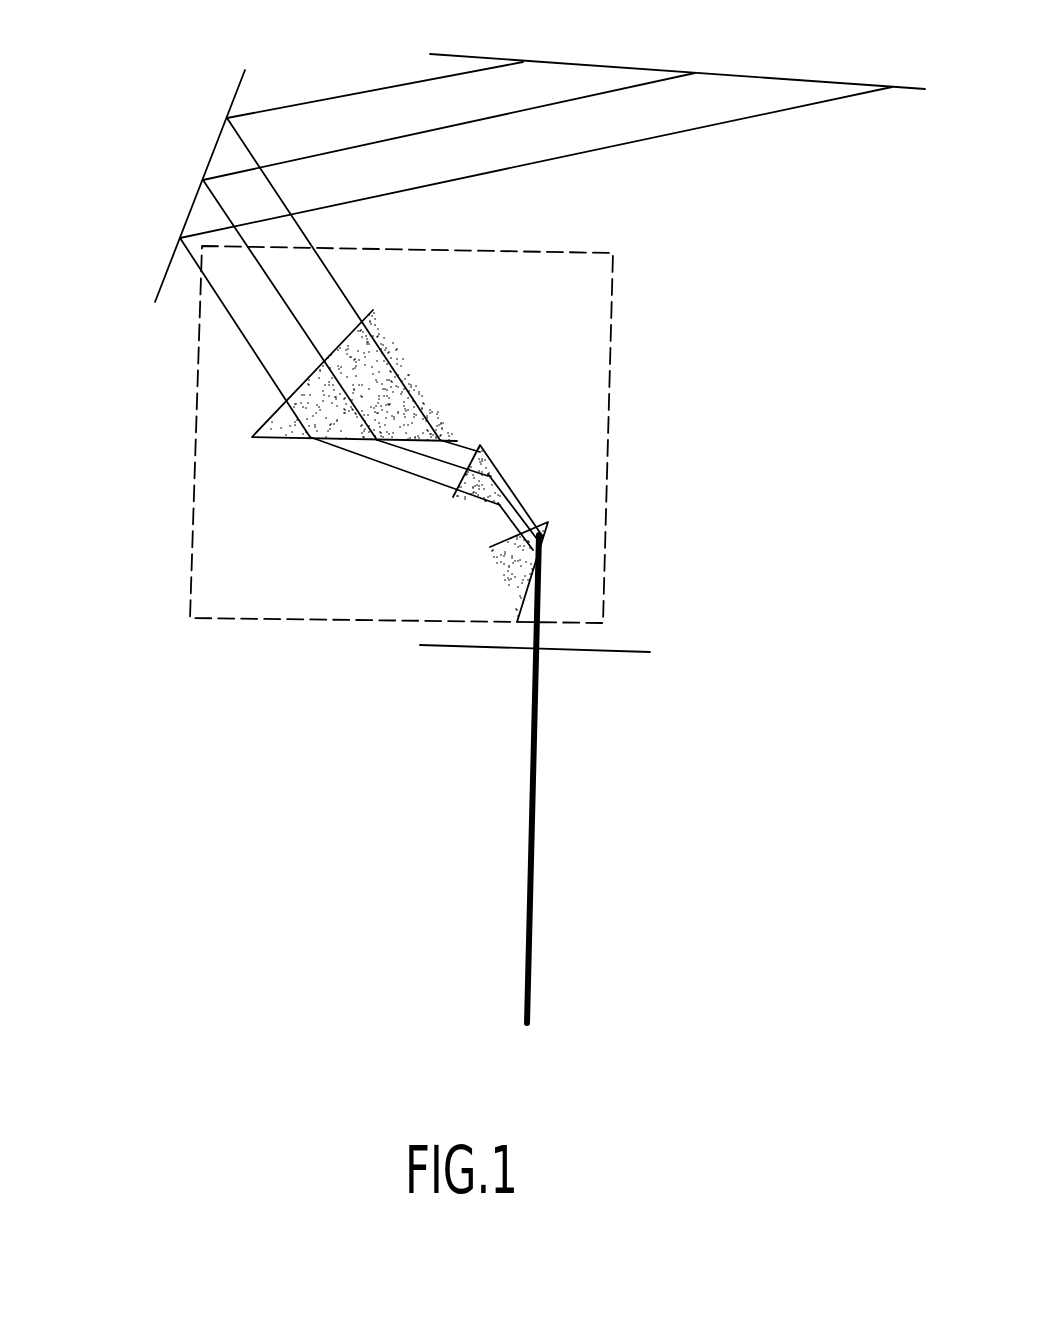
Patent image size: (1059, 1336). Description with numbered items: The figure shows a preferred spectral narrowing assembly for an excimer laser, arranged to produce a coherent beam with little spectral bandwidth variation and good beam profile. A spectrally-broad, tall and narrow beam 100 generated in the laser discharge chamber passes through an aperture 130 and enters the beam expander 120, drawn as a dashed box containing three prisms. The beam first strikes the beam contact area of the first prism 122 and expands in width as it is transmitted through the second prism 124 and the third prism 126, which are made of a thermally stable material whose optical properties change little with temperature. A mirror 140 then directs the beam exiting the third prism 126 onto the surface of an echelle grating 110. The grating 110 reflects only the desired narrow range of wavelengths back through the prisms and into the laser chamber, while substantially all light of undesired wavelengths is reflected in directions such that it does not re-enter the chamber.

The beam 100 is at (533, 868).
The echelle grating 110 is at (647, 72).
The beam expander 120 is at (195, 468).
The first prism 122 is at (503, 578).
The second prism 124 is at (483, 452).
The third prism 126 is at (397, 357).
The aperture 130 is at (608, 652).
The mirror 140 is at (207, 163).